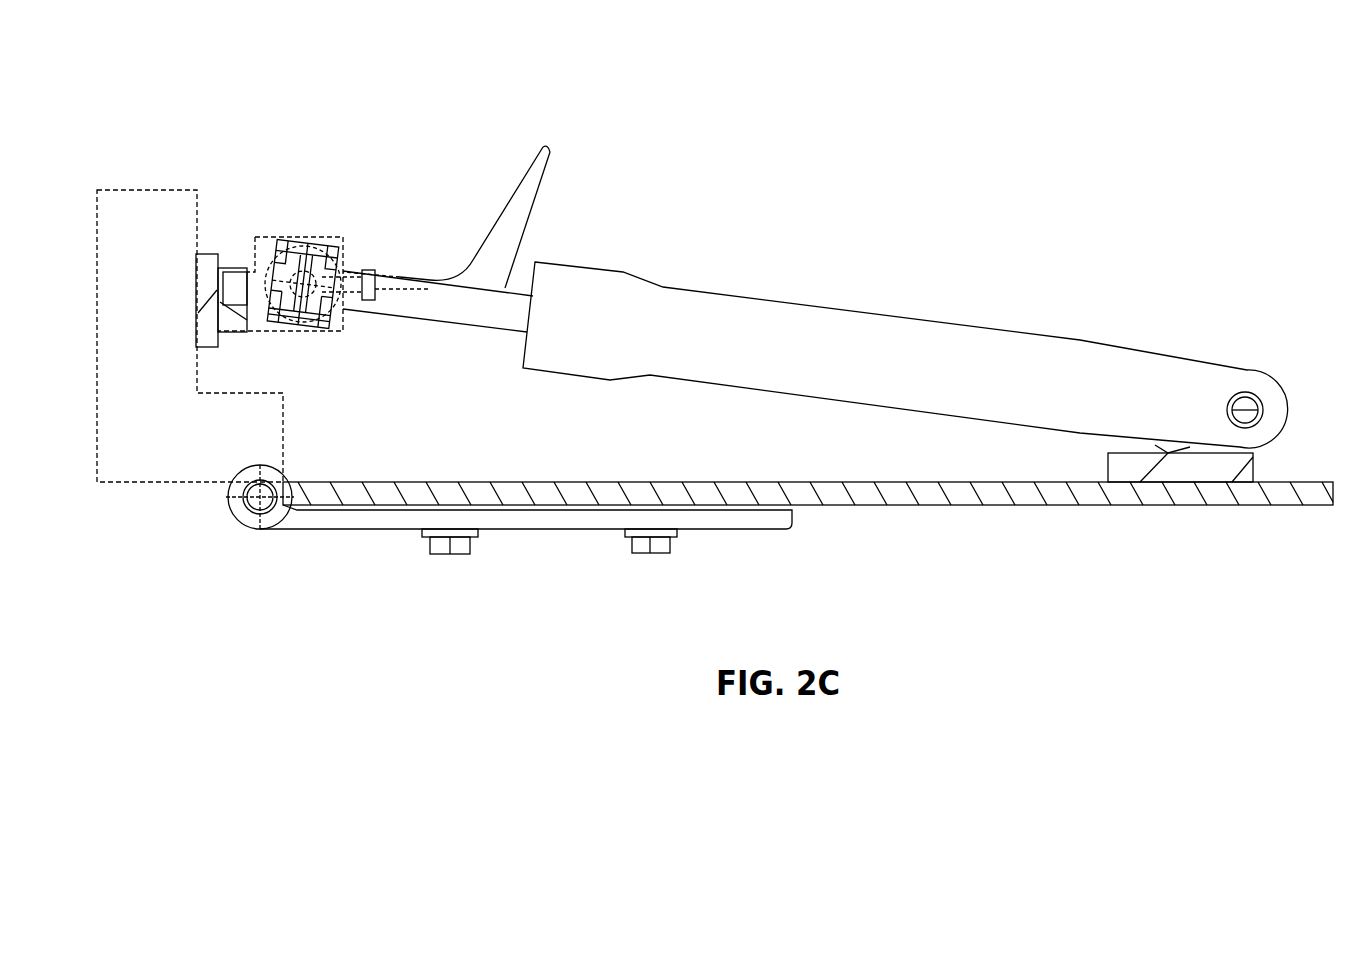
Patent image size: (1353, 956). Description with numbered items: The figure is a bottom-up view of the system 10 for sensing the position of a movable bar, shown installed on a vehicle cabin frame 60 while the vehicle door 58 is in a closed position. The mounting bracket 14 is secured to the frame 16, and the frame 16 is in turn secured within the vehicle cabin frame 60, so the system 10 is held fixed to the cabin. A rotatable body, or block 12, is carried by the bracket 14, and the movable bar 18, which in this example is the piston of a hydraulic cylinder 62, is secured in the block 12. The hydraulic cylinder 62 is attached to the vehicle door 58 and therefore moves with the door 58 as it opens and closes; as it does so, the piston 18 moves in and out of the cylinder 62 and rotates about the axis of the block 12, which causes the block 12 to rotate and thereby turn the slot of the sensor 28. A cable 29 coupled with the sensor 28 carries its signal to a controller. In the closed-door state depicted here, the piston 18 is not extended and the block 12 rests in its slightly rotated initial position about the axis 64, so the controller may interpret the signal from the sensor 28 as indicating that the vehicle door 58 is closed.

The system 10 is at (228, 120).
The rotatable body 12 is at (348, 235).
The mounting bracket 14 is at (263, 338).
The frame 16 is at (212, 252).
The movable bar 18 is at (507, 287).
The sensor 28 is at (368, 300).
The cable 29 is at (500, 208).
The vehicle door 58 is at (936, 507).
The vehicle cabin frame 60 is at (117, 190).
The hydraulic cylinder 62 is at (845, 300).
The axis 64 is at (343, 312).